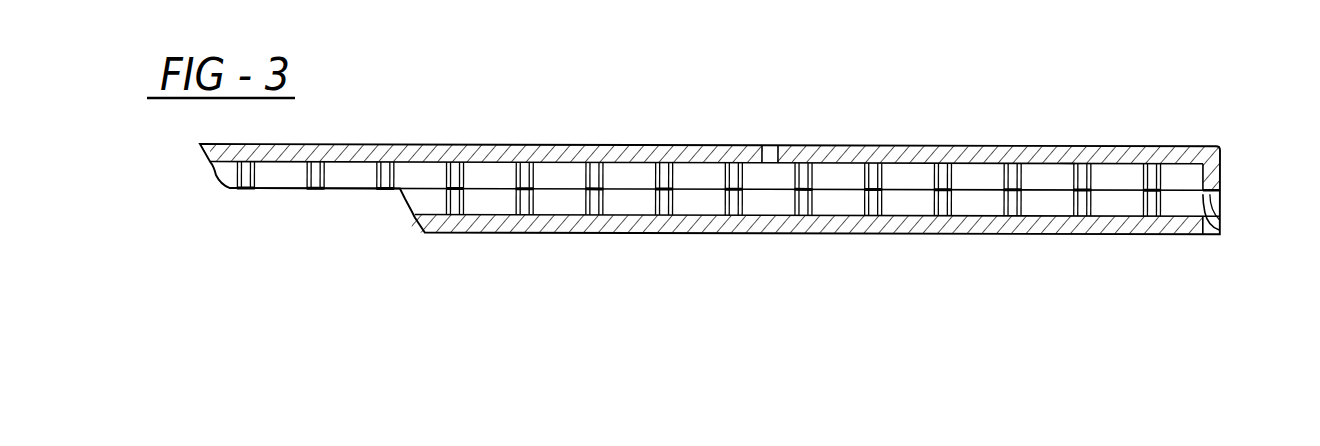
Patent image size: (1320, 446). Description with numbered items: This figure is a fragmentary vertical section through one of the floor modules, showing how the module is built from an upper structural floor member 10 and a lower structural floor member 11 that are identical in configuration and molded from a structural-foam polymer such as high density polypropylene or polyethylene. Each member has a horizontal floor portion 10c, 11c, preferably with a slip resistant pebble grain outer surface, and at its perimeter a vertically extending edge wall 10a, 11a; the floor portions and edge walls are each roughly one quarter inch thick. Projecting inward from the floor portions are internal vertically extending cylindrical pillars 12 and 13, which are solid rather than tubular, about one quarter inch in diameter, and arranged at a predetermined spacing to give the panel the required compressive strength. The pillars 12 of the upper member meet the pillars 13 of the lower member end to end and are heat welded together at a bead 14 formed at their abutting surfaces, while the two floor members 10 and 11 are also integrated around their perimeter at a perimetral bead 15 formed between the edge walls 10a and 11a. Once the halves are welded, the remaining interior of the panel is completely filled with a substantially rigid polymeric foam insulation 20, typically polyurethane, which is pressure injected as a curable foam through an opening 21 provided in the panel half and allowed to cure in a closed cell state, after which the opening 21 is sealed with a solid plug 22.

The upper structural floor member 10 is at (983, 157).
The perimetral edge 10a is at (1217, 174).
The horizontal floor portion 10c is at (518, 152).
The lower structural floor member 11 is at (1060, 233).
The perimetral edge 11a is at (1217, 208).
The horizontal floor portion 11c is at (487, 225).
The cylindrical pillar 12 is at (884, 173).
The cylindrical pillar 13 is at (877, 165).
The bead 14 is at (812, 188).
The perimetral bead 15 is at (1223, 221).
The foam insulation 20 is at (1045, 180).
The opening 21 is at (780, 141).
The plug 22 is at (774, 147).